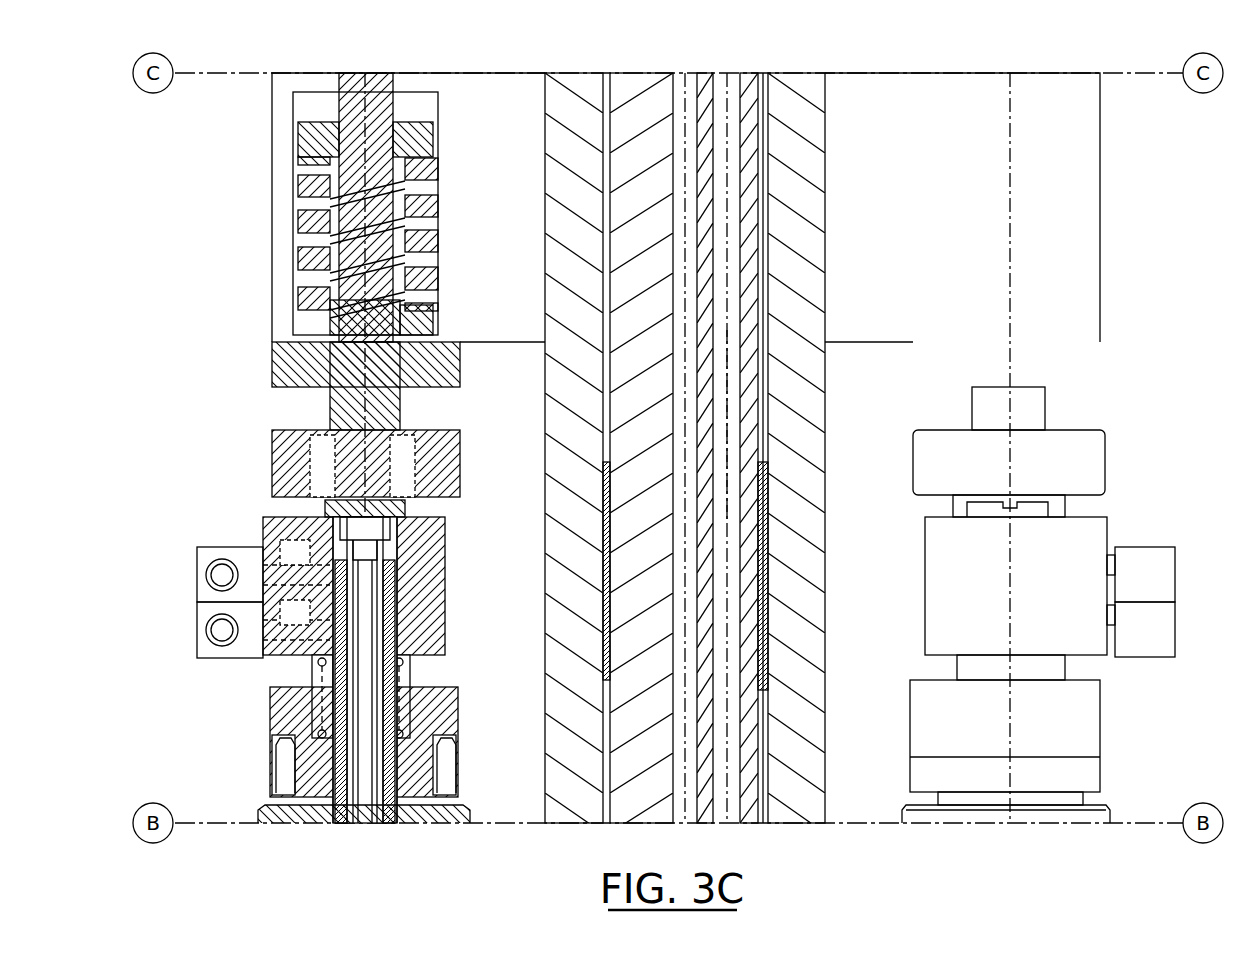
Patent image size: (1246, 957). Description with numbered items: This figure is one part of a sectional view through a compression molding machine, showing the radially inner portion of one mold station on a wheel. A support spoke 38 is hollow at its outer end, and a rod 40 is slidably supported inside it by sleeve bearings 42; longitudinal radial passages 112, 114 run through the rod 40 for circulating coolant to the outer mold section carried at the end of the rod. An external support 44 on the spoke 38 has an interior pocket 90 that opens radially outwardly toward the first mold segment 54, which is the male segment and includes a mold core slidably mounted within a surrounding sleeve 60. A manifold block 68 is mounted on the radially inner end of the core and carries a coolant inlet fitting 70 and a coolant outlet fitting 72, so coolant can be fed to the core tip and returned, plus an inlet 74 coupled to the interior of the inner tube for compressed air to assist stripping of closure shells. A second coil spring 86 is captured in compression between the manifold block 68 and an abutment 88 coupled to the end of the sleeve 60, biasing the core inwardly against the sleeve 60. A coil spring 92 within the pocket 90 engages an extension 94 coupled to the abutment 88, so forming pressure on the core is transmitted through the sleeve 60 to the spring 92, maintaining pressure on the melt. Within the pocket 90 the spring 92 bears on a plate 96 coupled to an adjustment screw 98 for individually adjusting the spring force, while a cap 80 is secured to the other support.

The support spoke 38 is at (805, 131).
The rod 40 is at (750, 250).
The sleeve bearings 42 is at (760, 570).
The external support 44 is at (278, 232).
The first mold segment 54 is at (208, 716).
The sleeve 60 is at (330, 790).
The manifold block 68 is at (440, 540).
The coolant inlet fitting 70 is at (205, 575).
The coolant outlet fitting 72 is at (205, 630).
The inlet 74 is at (262, 537).
The cap 80 is at (465, 815).
The second coil spring 86 is at (410, 662).
The abutment 88 is at (448, 700).
The interior pocket 90 is at (300, 108).
The coil spring 92 is at (300, 258).
The extension 94 is at (335, 410).
The plate 96 is at (297, 140).
The adjustment screw 98 is at (373, 95).
The longitudinal radial passage 112 is at (735, 430).
The longitudinal radial passage 114 is at (690, 380).